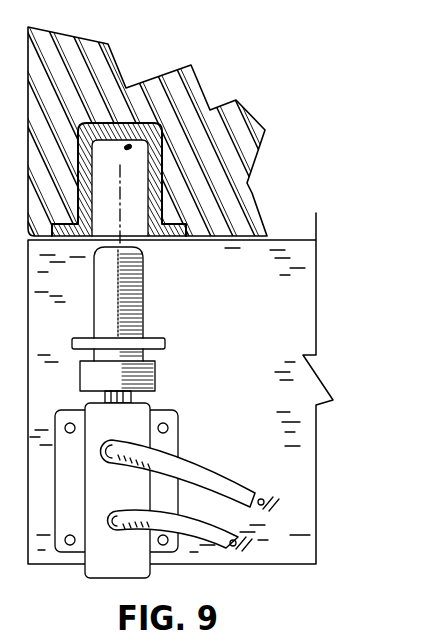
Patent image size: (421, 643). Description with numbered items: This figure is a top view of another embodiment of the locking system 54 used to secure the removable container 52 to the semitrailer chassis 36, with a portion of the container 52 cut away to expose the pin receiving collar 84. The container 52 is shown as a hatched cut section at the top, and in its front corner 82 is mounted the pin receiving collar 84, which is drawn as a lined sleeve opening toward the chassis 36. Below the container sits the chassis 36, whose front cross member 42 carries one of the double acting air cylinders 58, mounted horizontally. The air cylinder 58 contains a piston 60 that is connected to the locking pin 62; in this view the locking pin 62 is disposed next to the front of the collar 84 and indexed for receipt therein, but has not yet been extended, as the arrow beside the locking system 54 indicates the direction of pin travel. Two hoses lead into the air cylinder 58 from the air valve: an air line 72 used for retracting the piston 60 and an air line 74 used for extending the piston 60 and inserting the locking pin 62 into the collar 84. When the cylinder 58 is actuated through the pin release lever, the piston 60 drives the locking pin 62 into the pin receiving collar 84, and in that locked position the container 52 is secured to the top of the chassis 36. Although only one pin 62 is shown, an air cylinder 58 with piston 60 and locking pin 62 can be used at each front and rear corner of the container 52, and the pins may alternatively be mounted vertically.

The removable container 52 is at (240, 120).
The front corner 82 is at (236, 162).
The pin receiving collar 84 is at (160, 212).
The semitrailer chassis 36 is at (292, 341).
The front cross member 42 is at (297, 430).
The locking pin 62 is at (142, 308).
The locking system 54 is at (178, 334).
The piston 60 is at (130, 403).
The air cylinder 58 is at (127, 417).
The air line 72 is at (192, 465).
The air line 74 is at (183, 521).